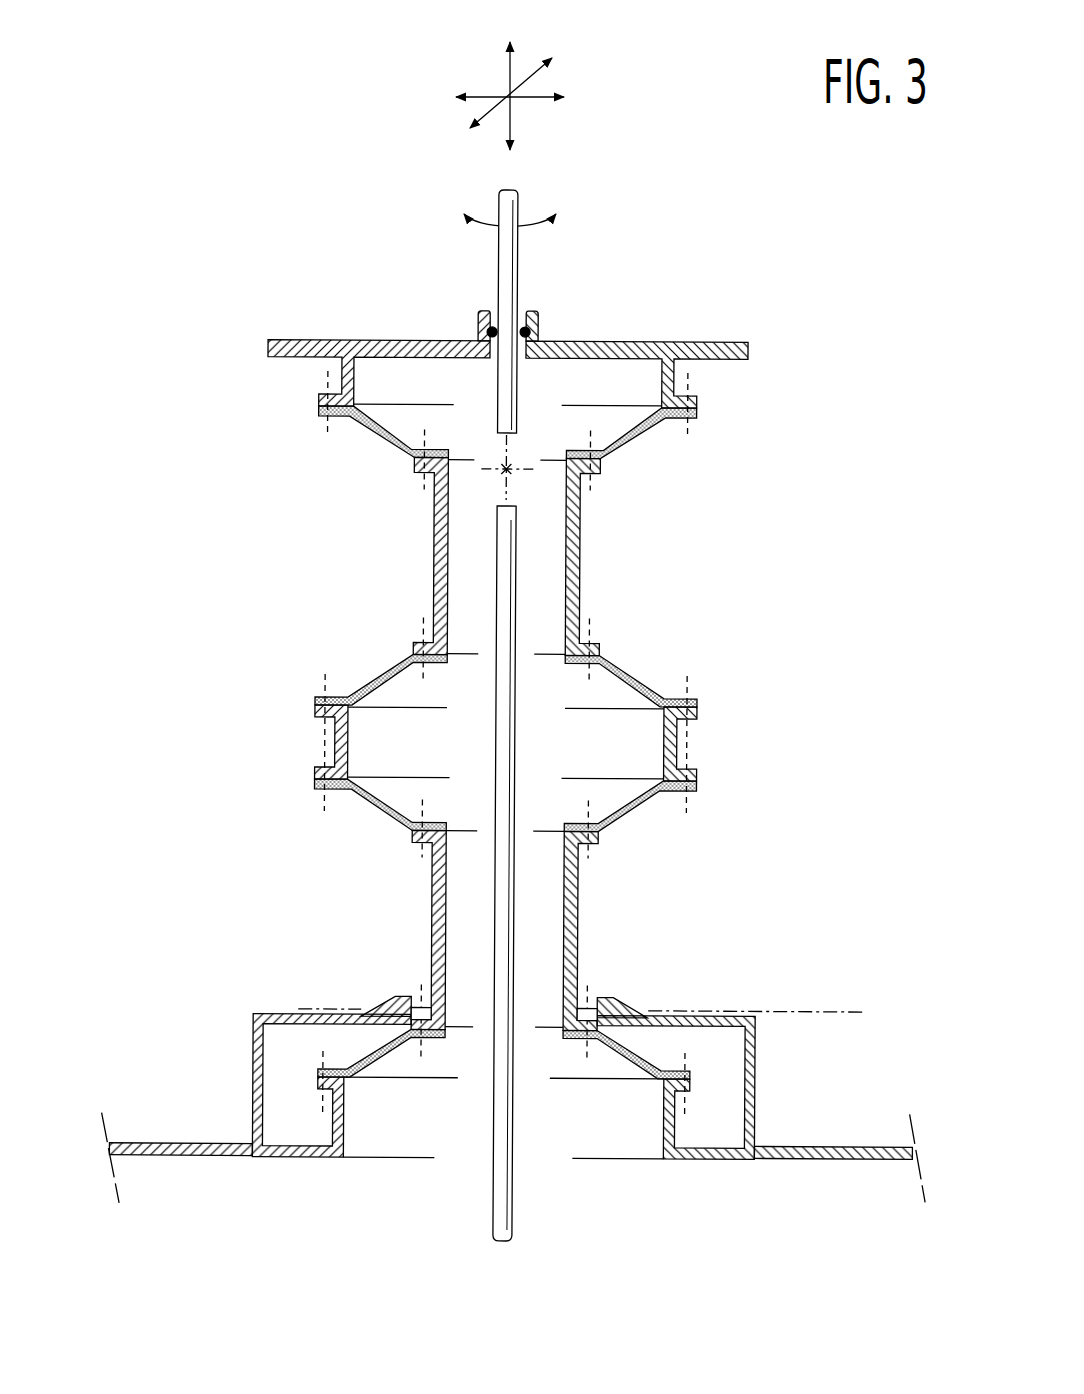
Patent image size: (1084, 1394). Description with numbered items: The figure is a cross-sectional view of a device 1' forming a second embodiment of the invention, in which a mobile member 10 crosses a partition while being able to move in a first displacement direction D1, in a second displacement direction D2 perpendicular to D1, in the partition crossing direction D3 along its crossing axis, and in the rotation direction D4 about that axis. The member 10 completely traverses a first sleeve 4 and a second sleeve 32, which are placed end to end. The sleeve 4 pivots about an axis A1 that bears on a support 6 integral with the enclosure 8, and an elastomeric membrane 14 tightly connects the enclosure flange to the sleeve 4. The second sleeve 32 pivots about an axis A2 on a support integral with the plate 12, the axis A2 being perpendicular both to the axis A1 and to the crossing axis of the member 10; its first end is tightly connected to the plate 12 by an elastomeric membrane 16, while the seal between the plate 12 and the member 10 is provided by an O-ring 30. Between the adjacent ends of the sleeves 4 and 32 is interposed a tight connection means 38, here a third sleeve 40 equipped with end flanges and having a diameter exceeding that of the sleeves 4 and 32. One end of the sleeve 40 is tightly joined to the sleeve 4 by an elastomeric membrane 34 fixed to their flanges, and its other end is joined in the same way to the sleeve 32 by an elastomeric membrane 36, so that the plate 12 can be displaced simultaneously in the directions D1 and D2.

The device 1' is at (516, 728).
The sleeve 4 is at (572, 942).
The support 6 is at (753, 1022).
The enclosure 8 is at (157, 1152).
The member 10 is at (495, 1223).
The plate 12 is at (322, 347).
The elastomeric membrane 14 is at (377, 1055).
The elastomeric membrane 16 is at (385, 446).
The O-ring 30 is at (484, 330).
The second sleeve 32 is at (580, 530).
The elastomeric membrane 34 is at (385, 816).
The elastomeric membrane 36 is at (383, 680).
The tight connection means 38 is at (300, 762).
The third sleeve 40 is at (662, 745).
The axis A1 is at (840, 1010).
The axis A2 is at (508, 466).
The first displacement direction D1 is at (540, 73).
The second displacement direction D2 is at (478, 97).
The partition crossing direction D3 is at (507, 67).
The rotation direction D4 is at (555, 218).